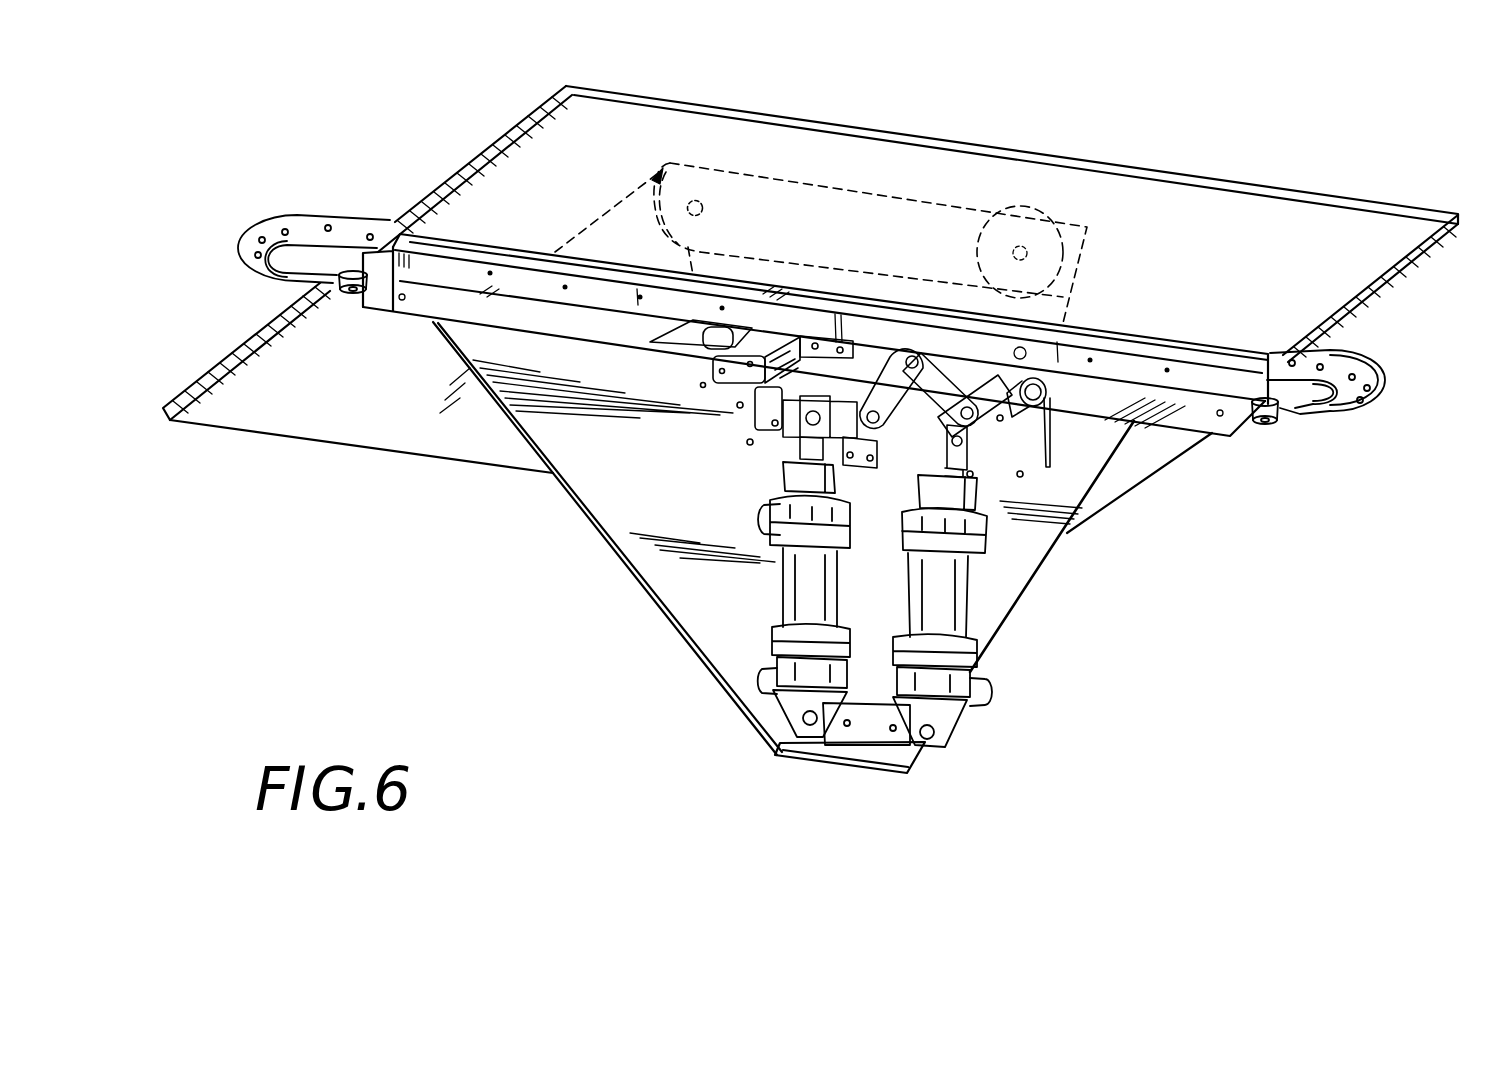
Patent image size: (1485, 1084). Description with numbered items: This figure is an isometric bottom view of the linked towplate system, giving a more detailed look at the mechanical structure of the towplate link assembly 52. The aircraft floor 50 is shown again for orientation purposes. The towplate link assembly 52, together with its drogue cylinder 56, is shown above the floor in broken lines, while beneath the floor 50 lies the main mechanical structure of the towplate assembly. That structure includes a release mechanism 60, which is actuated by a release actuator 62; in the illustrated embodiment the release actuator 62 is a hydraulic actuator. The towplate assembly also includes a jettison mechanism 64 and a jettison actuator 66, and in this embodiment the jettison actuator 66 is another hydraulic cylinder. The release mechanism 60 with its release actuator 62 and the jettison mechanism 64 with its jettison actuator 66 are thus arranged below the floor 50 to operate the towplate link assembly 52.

The aircraft floor 50 is at (1350, 196).
The towplate link assembly 52 is at (823, 190).
The drogue cylinder 56 is at (1020, 207).
The release mechanism 60 is at (980, 433).
The release actuator 62 is at (967, 597).
The jettison mechanism 64 is at (768, 432).
The jettison actuator 66 is at (780, 603).